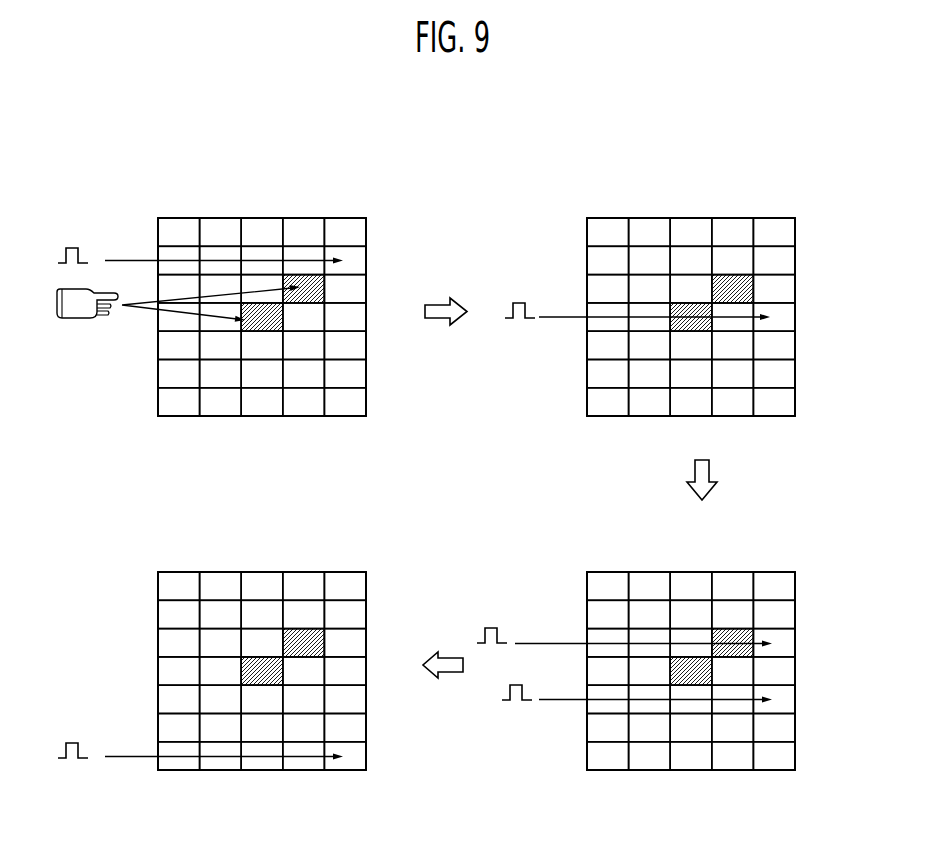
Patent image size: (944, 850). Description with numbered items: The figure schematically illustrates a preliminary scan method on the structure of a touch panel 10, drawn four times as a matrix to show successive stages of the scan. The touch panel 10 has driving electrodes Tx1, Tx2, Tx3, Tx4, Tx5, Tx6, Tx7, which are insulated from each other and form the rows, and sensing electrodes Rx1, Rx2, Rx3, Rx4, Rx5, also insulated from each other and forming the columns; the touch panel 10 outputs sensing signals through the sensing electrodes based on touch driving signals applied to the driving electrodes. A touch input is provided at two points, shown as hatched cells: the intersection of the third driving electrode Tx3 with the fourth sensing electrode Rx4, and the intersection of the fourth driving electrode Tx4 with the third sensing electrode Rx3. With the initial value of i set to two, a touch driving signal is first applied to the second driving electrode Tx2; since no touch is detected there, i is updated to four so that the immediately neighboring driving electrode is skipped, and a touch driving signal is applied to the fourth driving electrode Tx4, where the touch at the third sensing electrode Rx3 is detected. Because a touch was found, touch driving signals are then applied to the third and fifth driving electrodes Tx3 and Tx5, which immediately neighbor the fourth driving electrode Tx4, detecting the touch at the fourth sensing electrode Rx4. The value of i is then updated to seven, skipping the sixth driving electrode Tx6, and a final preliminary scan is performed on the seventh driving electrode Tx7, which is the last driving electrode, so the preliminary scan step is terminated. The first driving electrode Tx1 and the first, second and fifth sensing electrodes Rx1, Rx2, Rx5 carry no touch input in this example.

The touch panel 10 is at (376, 183).
The first driving electrode Tx1 is at (493, 409).
The second driving electrode Tx2 is at (493, 437).
The third driving electrode Tx3 is at (493, 466).
The fourth driving electrode Tx4 is at (493, 494).
The fifth driving electrode Tx5 is at (493, 522).
The sixth driving electrode Tx6 is at (493, 551).
The seventh driving electrode Tx7 is at (493, 579).
The first sensing electrode Rx1 is at (393, 481).
The second sensing electrode Rx2 is at (435, 481).
The third sensing electrode Rx3 is at (476, 481).
The fourth sensing electrode Rx4 is at (518, 481).
The fifth sensing electrode Rx5 is at (559, 481).